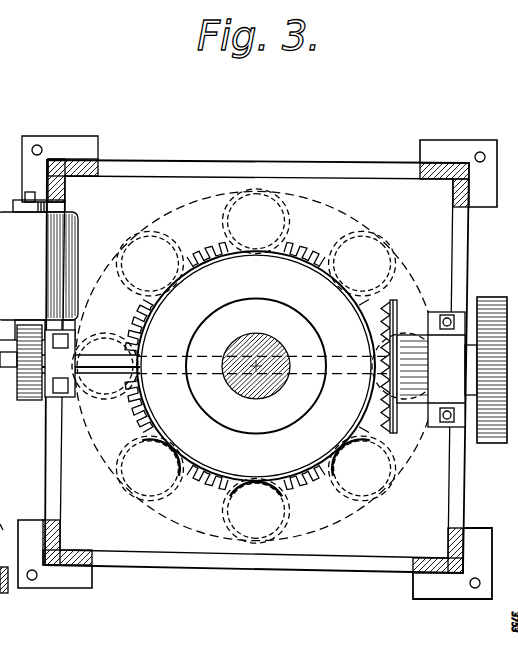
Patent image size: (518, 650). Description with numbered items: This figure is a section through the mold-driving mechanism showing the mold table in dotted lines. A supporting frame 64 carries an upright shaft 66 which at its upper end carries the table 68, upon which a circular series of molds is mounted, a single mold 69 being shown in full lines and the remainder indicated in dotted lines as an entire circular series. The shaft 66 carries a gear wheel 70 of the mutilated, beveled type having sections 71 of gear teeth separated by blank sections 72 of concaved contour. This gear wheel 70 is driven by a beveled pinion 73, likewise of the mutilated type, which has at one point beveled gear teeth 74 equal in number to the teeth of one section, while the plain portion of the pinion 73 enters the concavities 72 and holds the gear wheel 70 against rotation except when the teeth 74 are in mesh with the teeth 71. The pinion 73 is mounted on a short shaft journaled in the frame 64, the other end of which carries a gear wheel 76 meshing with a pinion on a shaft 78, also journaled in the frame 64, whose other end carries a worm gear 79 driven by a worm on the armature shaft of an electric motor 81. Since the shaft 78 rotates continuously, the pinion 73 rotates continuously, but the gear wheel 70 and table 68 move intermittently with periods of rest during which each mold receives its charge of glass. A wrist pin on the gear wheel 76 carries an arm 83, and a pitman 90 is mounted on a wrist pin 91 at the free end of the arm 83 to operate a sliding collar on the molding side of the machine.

The supporting frame 64 is at (166, 564).
The upright shaft 66 is at (261, 377).
The table 68 is at (72, 171).
The mold 69 is at (247, 385).
The gear wheel 70 is at (256, 377).
The sections of gear teeth 71 is at (256, 385).
The blank sections 72 is at (256, 366).
The beveled pinion 73 is at (395, 432).
The beveled gear teeth 74 is at (388, 303).
The gear wheel 76 is at (494, 443).
The shaft 78 is at (107, 376).
The worm gear 79 is at (33, 404).
The electric motor 81 is at (39, 266).
The arm 83 is at (8, 445).
The pitman 90 is at (0, 525).
The wrist pin 91 is at (1, 594).